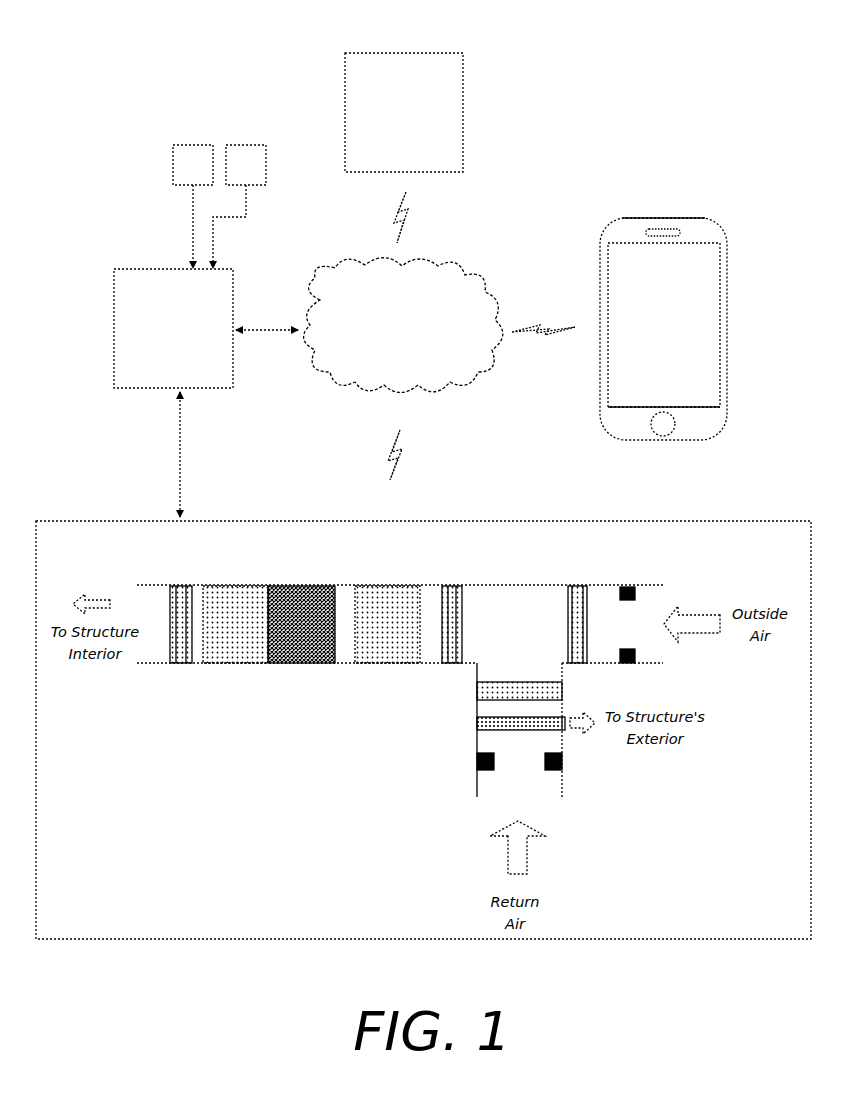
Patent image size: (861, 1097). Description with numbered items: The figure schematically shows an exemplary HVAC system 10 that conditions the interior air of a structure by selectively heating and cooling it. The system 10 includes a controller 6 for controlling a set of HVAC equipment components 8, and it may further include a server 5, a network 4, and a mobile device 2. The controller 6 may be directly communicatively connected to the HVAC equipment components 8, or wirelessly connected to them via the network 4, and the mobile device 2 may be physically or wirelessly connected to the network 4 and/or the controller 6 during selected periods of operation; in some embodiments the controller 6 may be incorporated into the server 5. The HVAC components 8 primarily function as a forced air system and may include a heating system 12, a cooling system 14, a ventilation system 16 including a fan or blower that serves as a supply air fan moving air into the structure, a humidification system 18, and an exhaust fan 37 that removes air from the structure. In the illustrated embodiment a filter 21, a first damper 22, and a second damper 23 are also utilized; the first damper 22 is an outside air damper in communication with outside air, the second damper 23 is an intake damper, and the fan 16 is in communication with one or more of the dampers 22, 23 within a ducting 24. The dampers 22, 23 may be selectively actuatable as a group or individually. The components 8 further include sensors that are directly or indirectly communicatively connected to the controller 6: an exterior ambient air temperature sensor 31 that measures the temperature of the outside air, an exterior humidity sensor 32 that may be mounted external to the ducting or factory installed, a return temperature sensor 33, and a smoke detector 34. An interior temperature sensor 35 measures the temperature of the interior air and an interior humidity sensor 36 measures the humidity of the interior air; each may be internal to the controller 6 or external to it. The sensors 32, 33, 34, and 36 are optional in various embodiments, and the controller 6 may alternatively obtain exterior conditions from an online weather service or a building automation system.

The HVAC system 10 is at (154, 72).
The mobile device 2 is at (638, 212).
The network 4 is at (403, 325).
The server 5 is at (393, 52).
The controller 6 is at (142, 268).
The HVAC equipment components 8 is at (497, 520).
The heating system 12 is at (242, 584).
The cooling system 14 is at (307, 584).
The ventilation system 16 is at (392, 584).
The humidification system 18 is at (184, 584).
The filter 21 is at (452, 584).
The first damper 22 is at (582, 584).
The second damper 23 is at (480, 683).
The ducting 24 is at (523, 584).
The exterior ambient air temperature sensor 31 is at (626, 585).
The exterior humidity sensor 32 is at (622, 665).
The return temperature sensor 33 is at (563, 758).
The smoke detector 34 is at (480, 752).
The interior temperature sensor 35 is at (193, 206).
The interior humidity sensor 36 is at (239, 206).
The exhaust fan 37 is at (480, 718).